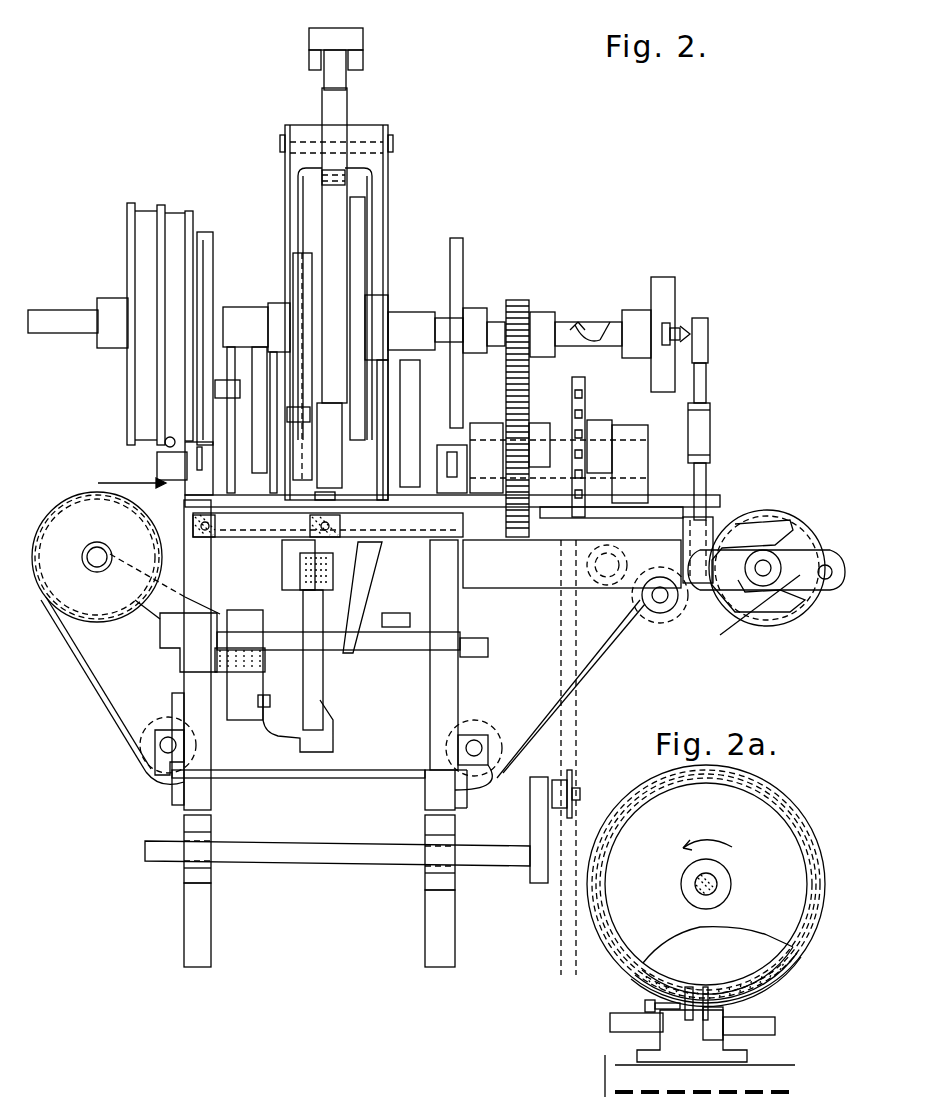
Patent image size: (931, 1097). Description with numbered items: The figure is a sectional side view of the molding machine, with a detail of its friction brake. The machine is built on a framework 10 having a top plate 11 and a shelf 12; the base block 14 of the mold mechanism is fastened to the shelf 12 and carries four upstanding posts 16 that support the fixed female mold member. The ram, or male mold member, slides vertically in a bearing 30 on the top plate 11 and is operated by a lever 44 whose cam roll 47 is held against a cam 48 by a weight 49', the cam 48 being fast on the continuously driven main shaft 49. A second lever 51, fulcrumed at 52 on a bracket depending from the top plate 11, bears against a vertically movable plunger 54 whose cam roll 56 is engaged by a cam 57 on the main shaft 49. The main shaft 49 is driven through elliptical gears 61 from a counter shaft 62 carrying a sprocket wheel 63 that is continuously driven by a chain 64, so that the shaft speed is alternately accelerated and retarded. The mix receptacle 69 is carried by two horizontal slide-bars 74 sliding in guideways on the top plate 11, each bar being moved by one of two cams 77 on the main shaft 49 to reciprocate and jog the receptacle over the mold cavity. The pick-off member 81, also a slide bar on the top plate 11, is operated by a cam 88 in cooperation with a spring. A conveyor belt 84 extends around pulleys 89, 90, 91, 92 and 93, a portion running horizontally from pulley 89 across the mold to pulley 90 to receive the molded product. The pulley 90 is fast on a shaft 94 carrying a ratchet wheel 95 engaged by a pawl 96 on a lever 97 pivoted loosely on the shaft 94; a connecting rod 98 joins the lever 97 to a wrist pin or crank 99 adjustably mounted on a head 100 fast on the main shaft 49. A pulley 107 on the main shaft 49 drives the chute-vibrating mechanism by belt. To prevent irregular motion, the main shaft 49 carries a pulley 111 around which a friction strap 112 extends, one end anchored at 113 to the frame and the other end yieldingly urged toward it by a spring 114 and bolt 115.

In FIG. 2, the framework 10 is at (211, 912).
In FIG. 2, the top plate 11 is at (623, 508).
In FIG. 2, the shelf 12 is at (488, 646).
In FIG. 2, the base block 14 is at (372, 632).
In FIG. 2, the upstanding posts 16 is at (378, 560).
In FIG. 2, the bearing 30 is at (327, 445).
In FIG. 2, the lever 44 is at (322, 79).
In FIG. 2, the cam roll 47 is at (338, 172).
In FIG. 2, the cam 48 is at (293, 203).
In FIG. 2, the main shaft 49 is at (325, 314).
In FIG. 2A, the main shaft 49 is at (683, 884).
In FIG. 2, the weight 49' is at (363, 59).
In FIG. 2, the lever 51 is at (292, 665).
In FIG. 2, the fulcrum 52 is at (267, 700).
In FIG. 2, the plunger 54 is at (297, 436).
In FIG. 2, the cam roll 56 is at (290, 412).
In FIG. 2, the cam 57 is at (302, 253).
In FIG. 2, the elliptical gears 61 is at (520, 367).
In FIG. 2, the counter shaft 62 is at (555, 452).
In FIG. 2, the sprocket wheel 63 is at (587, 408).
In FIG. 2, the chain 64 is at (578, 728).
In FIG. 2, the receptacle 69 is at (225, 390).
In FIG. 2, the slide-bars 74 is at (175, 462).
In FIG. 2A, the slide-bars 74 is at (775, 1027).
In FIG. 2, the cams 77 is at (205, 232).
In FIG. 2, the pick-off member 81 is at (338, 498).
In FIG. 2, the conveyor belt 84 is at (706, 505).
In FIG. 2, the cam 88 is at (357, 215).
In FIG. 2, the pulley 89 is at (108, 605).
In FIG. 2, the pulley 90 is at (782, 626).
In FIG. 2, the pulley 91 is at (664, 615).
In FIG. 2, the pulley 92 is at (478, 722).
In FIG. 2, the pulley 93 is at (173, 718).
In FIG. 2, the shaft 94 is at (763, 550).
In FIG. 2, the ratchet wheel 95 is at (790, 520).
In FIG. 2, the pawl 96 is at (822, 590).
In FIG. 2, the lever 97 is at (755, 615).
In FIG. 2, the connecting rod 98 is at (706, 440).
In FIG. 2, the wrist pin or crank 99 is at (682, 322).
In FIG. 2, the head 100 is at (668, 285).
In FIG. 2, the pulley 107 is at (145, 230).
In FIG. 2A, the pulley 107 is at (706, 884).
In FIG. 2, the pulley 111 is at (193, 272).
In FIG. 2A, the pulley 111 is at (673, 978).
In FIG. 2, the friction strap 112 is at (165, 205).
In FIG. 2A, the friction strap 112 is at (638, 986).
In FIG. 2A, the anchor point 113 is at (693, 1025).
In FIG. 2A, the spring 114 is at (655, 1025).
In FIG. 2A, the bolt 115 is at (645, 1006).